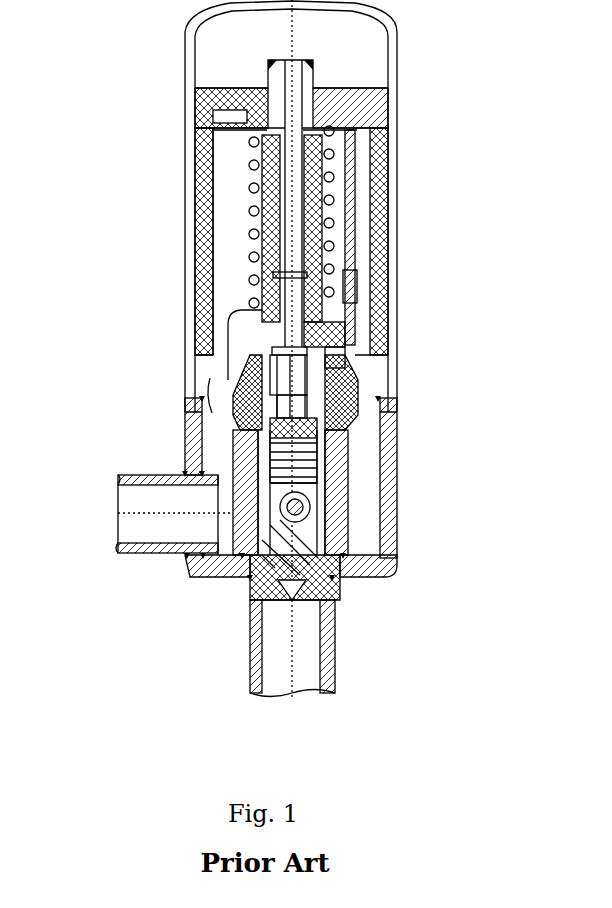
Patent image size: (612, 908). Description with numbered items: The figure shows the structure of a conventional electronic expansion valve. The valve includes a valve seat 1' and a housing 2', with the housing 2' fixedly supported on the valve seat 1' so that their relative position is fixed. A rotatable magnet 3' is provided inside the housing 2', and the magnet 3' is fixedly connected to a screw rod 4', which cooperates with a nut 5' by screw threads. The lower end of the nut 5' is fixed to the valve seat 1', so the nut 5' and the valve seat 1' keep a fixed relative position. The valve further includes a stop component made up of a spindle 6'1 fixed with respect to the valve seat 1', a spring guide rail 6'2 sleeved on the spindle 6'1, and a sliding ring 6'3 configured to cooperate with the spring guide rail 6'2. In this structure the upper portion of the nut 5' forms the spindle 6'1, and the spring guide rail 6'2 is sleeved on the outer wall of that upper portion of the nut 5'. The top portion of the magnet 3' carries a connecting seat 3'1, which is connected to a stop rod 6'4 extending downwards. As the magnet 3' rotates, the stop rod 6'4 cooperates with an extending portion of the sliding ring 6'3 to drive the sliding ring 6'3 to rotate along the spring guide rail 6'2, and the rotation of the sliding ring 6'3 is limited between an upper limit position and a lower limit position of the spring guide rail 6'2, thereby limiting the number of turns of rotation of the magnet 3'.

The valve seat 1' is at (307, 547).
The housing 2' is at (355, 206).
The magnet 3' is at (345, 241).
The connecting seat 3'1 is at (355, 91).
The screw rod 4' is at (187, 350).
The nut 5' is at (206, 428).
The spindle 6'1 is at (201, 233).
The spring guide rail 6'2 is at (195, 171).
The sliding ring 6'3 is at (192, 263).
The stop rod 6'4 is at (355, 241).